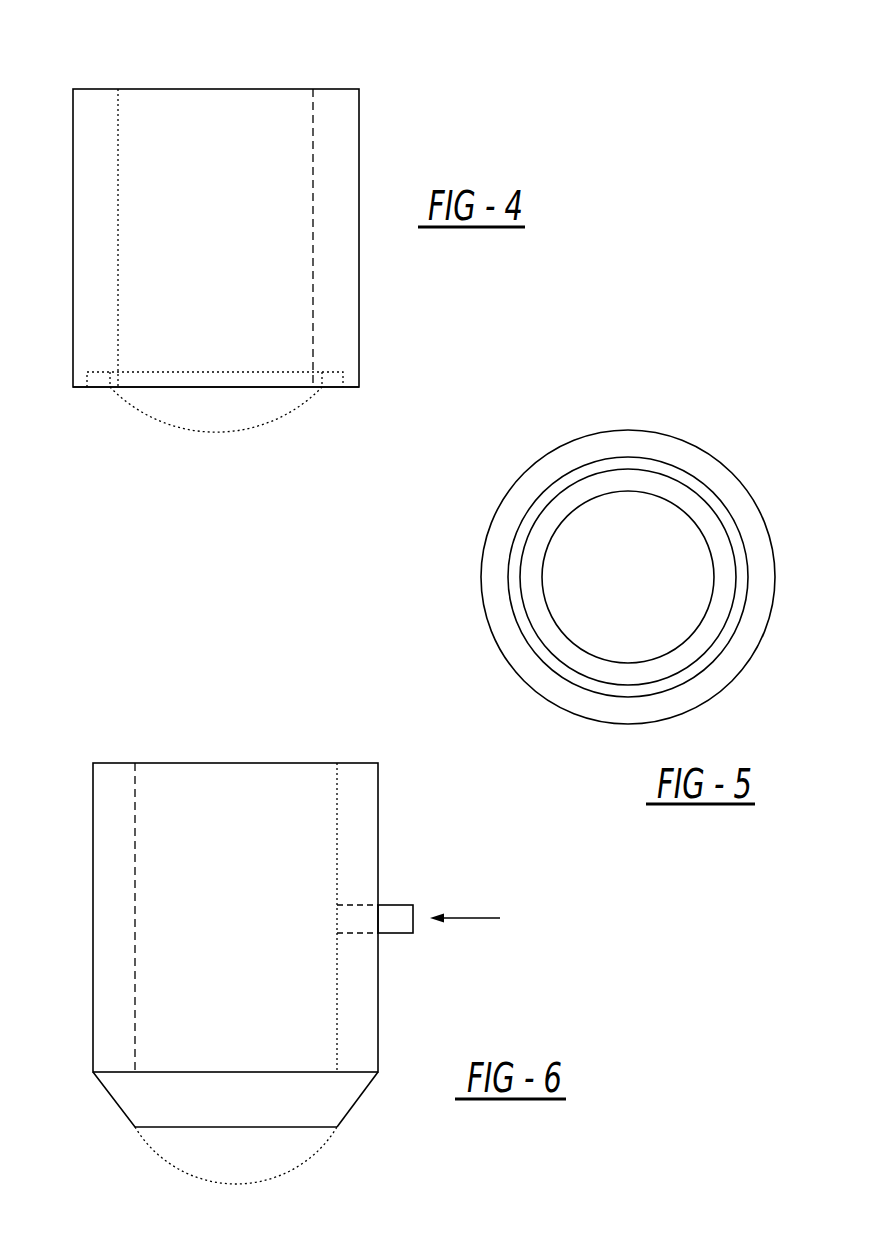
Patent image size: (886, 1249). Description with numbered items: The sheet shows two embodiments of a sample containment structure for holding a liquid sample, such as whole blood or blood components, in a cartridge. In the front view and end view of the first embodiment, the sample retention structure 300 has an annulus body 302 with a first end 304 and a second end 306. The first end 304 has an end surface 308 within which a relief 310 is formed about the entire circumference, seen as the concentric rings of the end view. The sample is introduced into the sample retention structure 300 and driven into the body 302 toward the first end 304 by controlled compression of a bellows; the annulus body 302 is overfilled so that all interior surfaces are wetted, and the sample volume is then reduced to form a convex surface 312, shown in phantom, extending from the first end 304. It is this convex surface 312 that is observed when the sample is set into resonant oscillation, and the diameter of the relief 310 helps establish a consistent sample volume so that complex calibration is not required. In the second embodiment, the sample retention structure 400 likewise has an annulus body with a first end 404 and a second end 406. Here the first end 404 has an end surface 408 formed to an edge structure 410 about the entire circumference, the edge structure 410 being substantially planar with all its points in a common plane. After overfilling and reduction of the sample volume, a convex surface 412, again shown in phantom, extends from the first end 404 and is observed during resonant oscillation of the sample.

In FIG. 4, the sample retention structure 300 is at (333, 89).
In FIG. 5, the sample retention structure 300 is at (660, 430).
In FIG. 4, the annulus body 302 is at (359, 162).
In FIG. 5, the annulus body 302 is at (758, 503).
In FIG. 4, the first end 304 is at (350, 387).
In FIG. 5, the first end 304 is at (753, 623).
In FIG. 4, the second end 306 is at (98, 89).
In FIG. 4, the end surface 308 is at (82, 387).
In FIG. 5, the end surface 308 is at (590, 700).
In FIG. 4, the relief 310 is at (332, 387).
In FIG. 5, the relief 310 is at (545, 648).
In FIG. 4, the convex surface 312 is at (216, 432).
In FIG. 6, the sample retention structure 400 is at (378, 782).
In FIG. 6, the first end 404 is at (337, 1127).
In FIG. 6, the second end 406 is at (112, 763).
In FIG. 6, the end surface 408 is at (400, 905).
In FIG. 6, the edge structure 410 is at (135, 1127).
In FIG. 6, the convex surface 412 is at (258, 1182).